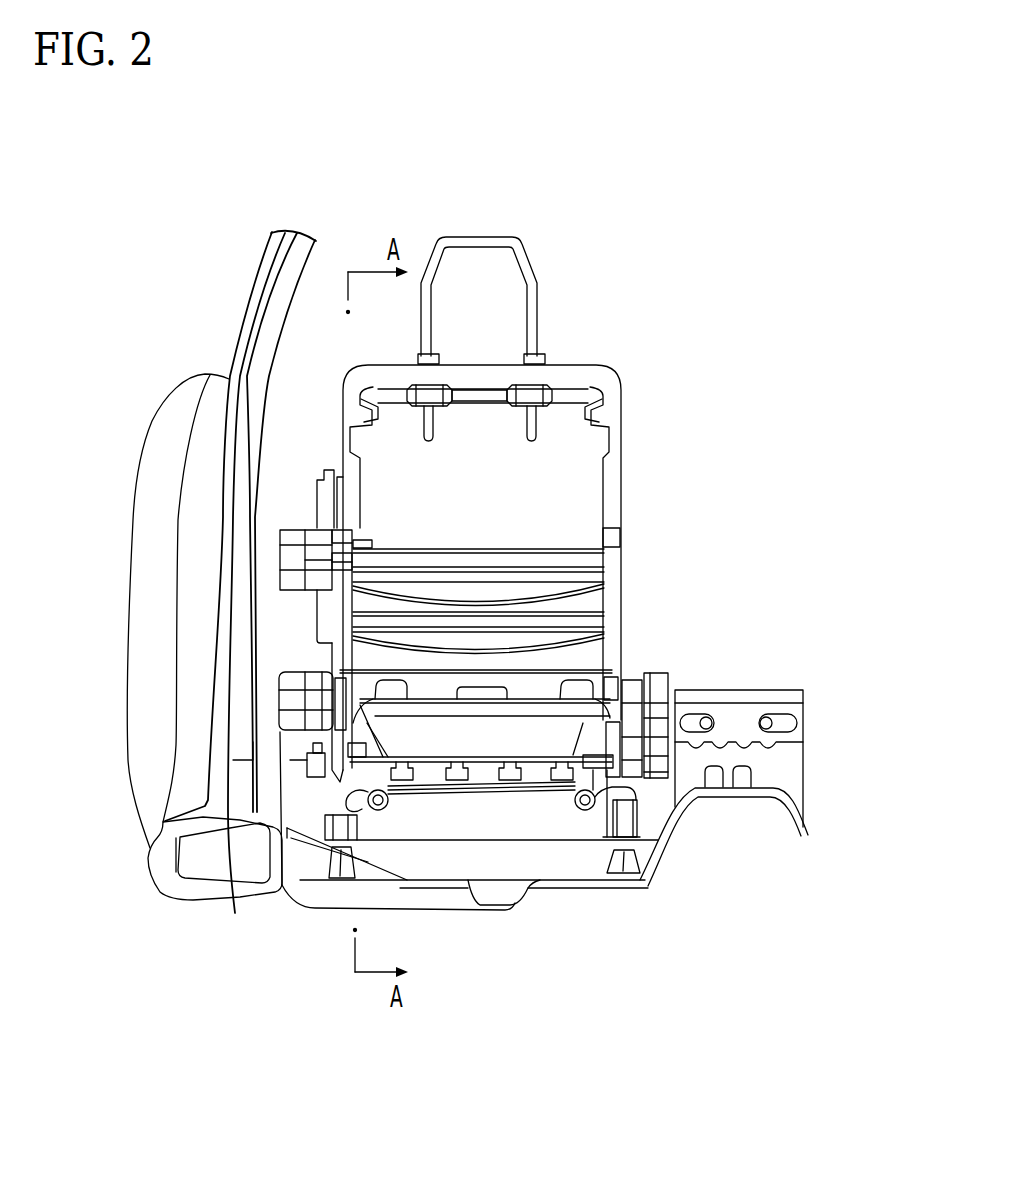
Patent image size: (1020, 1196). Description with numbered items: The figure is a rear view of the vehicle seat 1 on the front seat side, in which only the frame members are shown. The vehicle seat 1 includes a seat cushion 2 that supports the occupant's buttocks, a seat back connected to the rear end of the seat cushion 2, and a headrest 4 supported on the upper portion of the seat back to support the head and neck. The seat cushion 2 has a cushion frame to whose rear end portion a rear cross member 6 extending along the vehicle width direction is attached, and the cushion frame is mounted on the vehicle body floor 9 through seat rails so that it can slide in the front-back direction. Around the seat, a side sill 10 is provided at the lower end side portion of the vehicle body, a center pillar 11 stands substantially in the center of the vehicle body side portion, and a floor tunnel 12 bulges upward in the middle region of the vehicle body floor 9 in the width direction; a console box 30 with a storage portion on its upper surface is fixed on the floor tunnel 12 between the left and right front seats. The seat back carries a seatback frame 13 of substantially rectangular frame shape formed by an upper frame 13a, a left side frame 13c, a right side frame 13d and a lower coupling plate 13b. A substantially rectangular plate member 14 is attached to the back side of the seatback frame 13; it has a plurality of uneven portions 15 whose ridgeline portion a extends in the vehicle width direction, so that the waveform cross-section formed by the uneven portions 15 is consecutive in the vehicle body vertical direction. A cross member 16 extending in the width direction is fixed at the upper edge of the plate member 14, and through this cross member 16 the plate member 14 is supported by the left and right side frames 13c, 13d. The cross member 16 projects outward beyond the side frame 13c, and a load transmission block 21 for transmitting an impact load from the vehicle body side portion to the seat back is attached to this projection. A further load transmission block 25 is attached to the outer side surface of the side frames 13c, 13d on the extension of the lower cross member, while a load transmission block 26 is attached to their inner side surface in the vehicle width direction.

The vehicle seat 1 is at (645, 273).
The seat cushion 2 is at (443, 795).
The headrest 4 is at (495, 234).
The rear cross member 6 is at (590, 762).
The vehicle body floor 9 is at (516, 838).
The side sill 10 is at (163, 893).
The center pillar 11 is at (250, 322).
The floor tunnel 12 is at (765, 795).
The seatback frame 13 is at (620, 383).
The upper frame 13a is at (565, 368).
The lower coupling plate 13b is at (320, 752).
The left side frame 13c is at (350, 420).
The right side frame 13d is at (612, 418).
The plate member 14 is at (575, 607).
The uneven portions 15 is at (590, 600).
The ridgeline portion a is at (568, 592).
The cross member 16 is at (342, 558).
The load transmission block 21 is at (295, 546).
The load transmission block 25 is at (290, 685).
The load transmission block 26 is at (660, 713).
The console box 30 is at (788, 697).